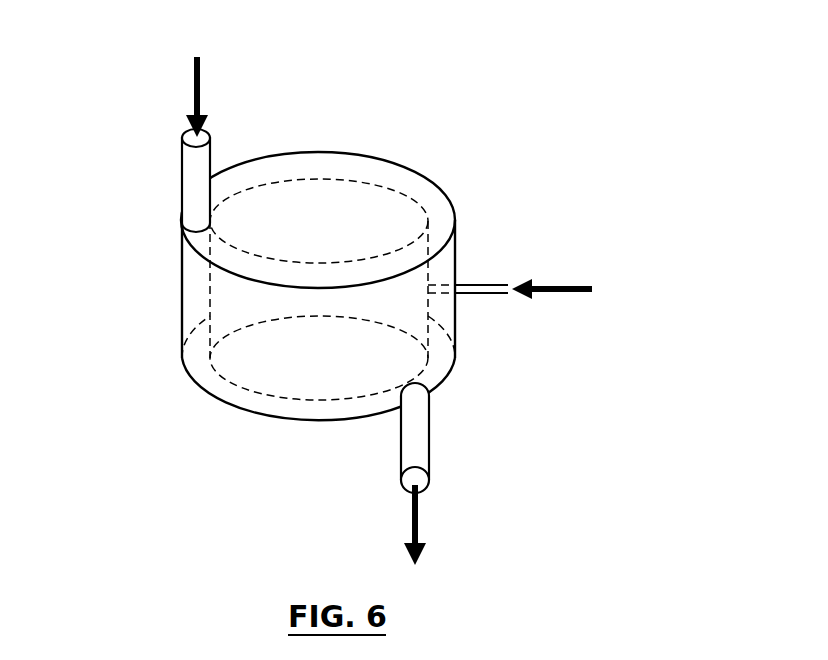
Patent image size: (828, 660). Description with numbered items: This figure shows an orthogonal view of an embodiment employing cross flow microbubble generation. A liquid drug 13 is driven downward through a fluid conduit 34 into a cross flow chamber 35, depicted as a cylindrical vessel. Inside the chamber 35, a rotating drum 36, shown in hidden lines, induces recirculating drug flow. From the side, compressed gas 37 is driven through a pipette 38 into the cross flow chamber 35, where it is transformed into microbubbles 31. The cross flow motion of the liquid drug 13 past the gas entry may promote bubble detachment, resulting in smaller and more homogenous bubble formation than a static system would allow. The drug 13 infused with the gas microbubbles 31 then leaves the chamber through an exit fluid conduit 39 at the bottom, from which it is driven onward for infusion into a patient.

The liquid drug 13 is at (199, 80).
The microbubbles 31 is at (403, 541).
The fluid conduit 34 is at (182, 174).
The cross flow chamber 35 is at (403, 168).
The rotating drum 36 is at (290, 227).
The compressed gas 37 is at (553, 296).
The pipette 38 is at (478, 286).
The exit fluid conduit 39 is at (429, 448).